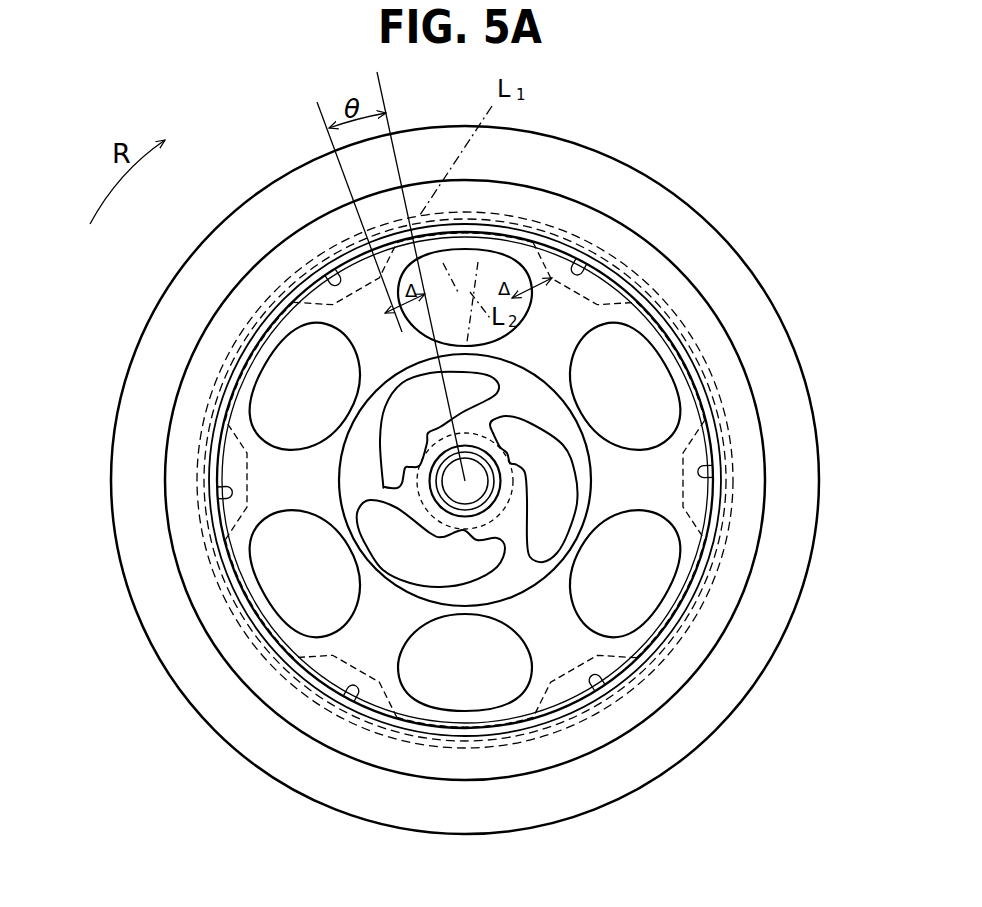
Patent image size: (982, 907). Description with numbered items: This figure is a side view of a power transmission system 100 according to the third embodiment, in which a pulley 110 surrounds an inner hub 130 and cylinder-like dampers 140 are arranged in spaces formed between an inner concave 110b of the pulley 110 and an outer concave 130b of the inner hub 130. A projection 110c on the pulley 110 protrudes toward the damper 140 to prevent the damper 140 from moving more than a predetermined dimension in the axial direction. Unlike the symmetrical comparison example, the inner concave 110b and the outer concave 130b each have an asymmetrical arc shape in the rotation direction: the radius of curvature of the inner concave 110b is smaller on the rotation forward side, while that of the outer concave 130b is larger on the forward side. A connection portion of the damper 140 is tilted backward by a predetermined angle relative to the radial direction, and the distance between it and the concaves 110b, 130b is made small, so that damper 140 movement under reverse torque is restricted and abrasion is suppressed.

The wheel 100 is at (567, 130).
The pulley 110 is at (630, 197).
The inner concave 110b is at (383, 300).
The projection 110c is at (293, 302).
The inner hub 130 is at (638, 495).
The outer concave 130b is at (322, 322).
The damper 140 is at (493, 268).